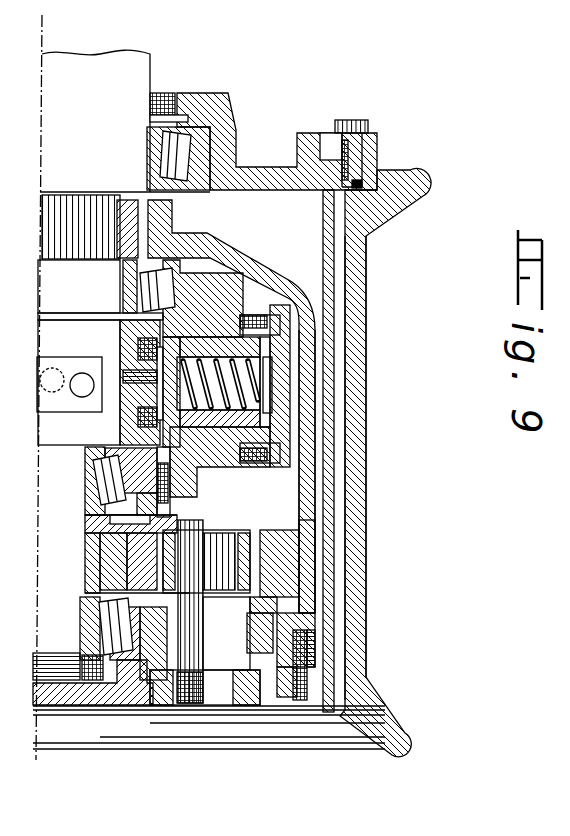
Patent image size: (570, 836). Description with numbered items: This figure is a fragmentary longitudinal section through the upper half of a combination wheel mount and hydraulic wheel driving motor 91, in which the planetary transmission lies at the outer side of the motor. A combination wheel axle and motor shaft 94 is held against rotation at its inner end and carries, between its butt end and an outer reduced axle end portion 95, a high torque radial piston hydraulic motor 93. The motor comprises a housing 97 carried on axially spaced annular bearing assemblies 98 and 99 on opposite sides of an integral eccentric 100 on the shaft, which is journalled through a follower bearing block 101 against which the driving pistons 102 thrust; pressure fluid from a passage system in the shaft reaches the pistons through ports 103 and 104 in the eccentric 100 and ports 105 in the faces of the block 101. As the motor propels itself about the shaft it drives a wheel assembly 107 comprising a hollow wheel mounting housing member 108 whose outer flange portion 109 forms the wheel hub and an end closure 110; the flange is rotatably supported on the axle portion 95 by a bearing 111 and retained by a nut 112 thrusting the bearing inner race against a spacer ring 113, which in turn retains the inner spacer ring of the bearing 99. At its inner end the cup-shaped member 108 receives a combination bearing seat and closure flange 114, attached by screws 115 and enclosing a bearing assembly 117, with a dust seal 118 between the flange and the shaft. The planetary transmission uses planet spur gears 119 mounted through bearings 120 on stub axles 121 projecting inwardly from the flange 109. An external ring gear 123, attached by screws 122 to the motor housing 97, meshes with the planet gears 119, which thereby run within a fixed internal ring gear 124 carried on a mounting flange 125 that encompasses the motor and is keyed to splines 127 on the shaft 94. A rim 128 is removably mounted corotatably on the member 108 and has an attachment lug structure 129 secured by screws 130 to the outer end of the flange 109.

The combination wheel mount and hydraulic wheel driving motor 91 is at (294, 376).
The high torque radial piston hydraulic motor 93 is at (268, 537).
The combination wheel axle and motor shaft 94 is at (135, 67).
The outer reduced axle end portion 95 is at (40, 615).
The housing 97 is at (258, 406).
The annular bearing assembly 98 is at (157, 290).
The annular bearing assembly 99 is at (110, 480).
The eccentric 100 is at (62, 428).
The follower bearing block 101 is at (135, 332).
The driving piston 102 is at (265, 341).
The port 103 is at (81, 373).
The port 104 is at (52, 380).
The port 105 is at (133, 390).
The wheel assembly 107 is at (385, 462).
The wheel mounting housing member 108 is at (327, 388).
The flange portion 109 is at (268, 655).
The end closure 110 is at (33, 690).
The tapered roller bearing 111 is at (113, 623).
The nut 112 is at (45, 30).
The spacer ring 113 is at (90, 553).
The combination bearing seat and closure flange 114 is at (267, 180).
The screw 115 is at (358, 120).
The bearing assembly 117 is at (173, 151).
The dust seal 118 is at (163, 97).
The planet spur gear 119 is at (252, 535).
The bearing 120 is at (218, 541).
The stub axle 121 is at (216, 537).
The screw 122 is at (226, 535).
The external ring gear 123 is at (110, 527).
The fixed internal ring gear 124 is at (318, 570).
The mounting flange 125 is at (310, 337).
The splines 127 is at (105, 213).
The rim 128 is at (355, 457).
The attachment lug structure 129 is at (308, 680).
The screw 130 is at (320, 647).